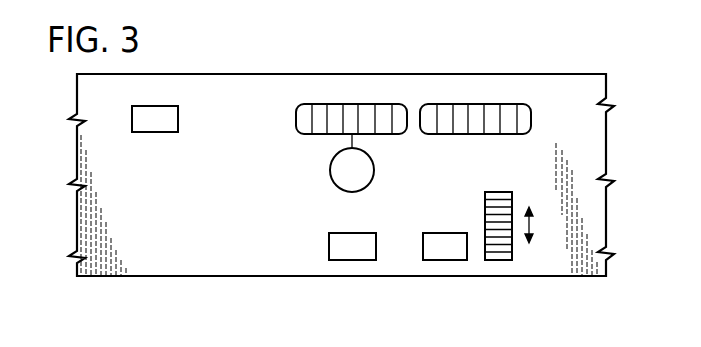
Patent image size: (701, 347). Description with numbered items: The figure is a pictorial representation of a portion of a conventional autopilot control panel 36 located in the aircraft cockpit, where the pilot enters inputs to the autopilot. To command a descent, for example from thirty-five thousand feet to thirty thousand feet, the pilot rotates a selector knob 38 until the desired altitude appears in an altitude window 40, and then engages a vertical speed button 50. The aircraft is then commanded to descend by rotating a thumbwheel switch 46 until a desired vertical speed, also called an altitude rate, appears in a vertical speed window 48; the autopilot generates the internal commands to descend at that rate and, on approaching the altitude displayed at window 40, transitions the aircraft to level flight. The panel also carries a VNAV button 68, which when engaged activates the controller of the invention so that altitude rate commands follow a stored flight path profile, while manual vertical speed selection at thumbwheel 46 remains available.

The autopilot control panel 36 is at (255, 66).
The VNAV button 68 is at (163, 132).
The altitude window 40 is at (296, 125).
The selector knob 38 is at (330, 170).
The vertical speed window 48 is at (532, 118).
The vertical speed button 50 is at (449, 260).
The thumbwheel switch 46 is at (505, 260).